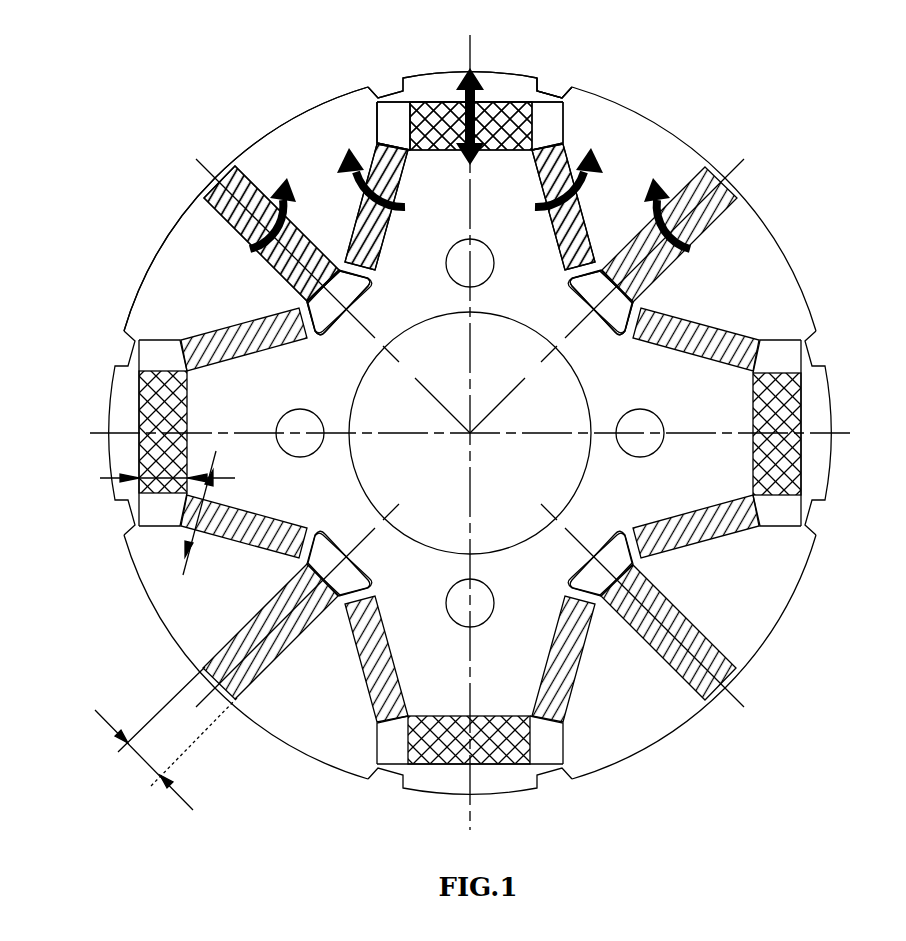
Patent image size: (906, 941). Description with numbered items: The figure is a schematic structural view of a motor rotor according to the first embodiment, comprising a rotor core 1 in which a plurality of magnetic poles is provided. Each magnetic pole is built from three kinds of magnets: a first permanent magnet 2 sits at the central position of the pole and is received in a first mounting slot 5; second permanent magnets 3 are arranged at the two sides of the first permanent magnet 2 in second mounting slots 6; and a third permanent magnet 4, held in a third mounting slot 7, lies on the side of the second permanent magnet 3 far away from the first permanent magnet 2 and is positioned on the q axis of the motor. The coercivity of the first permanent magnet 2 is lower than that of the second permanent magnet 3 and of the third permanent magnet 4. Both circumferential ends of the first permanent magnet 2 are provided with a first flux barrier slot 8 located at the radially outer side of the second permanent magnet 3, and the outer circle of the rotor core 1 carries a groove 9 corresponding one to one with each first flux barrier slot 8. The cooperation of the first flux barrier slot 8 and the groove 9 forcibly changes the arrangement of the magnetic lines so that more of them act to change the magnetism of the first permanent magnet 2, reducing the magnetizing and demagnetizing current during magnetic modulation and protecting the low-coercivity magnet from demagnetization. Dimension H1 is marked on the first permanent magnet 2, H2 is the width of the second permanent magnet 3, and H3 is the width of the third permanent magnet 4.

The rotor core 1 is at (615, 120).
The first permanent magnet 2 is at (492, 112).
The second permanent magnet 3 is at (600, 265).
The third permanent magnet 4 is at (243, 185).
The first mounting slot 5 is at (425, 102).
The second mounting slot 6 is at (583, 235).
The third mounting slot 7 is at (257, 180).
The first flux barrier slot 8 is at (395, 117).
The groove 9 is at (558, 85).
The first magnet thickness H1 is at (151, 479).
The width of the second permanent magnet H2 is at (204, 519).
The width of the third permanent magnet H3 is at (166, 738).